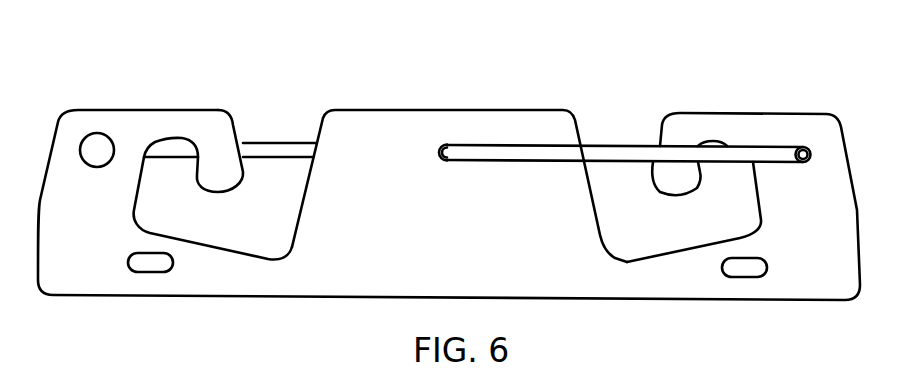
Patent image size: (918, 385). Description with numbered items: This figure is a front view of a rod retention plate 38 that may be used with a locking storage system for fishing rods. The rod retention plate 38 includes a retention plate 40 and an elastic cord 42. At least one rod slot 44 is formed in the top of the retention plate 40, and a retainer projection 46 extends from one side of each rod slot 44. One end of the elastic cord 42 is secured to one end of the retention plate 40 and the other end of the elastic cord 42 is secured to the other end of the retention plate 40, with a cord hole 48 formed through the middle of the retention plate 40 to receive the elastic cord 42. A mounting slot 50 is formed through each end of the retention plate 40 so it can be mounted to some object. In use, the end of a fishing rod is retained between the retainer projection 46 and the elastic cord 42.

The rod retention plate 38 is at (537, 88).
The retention plate 40 is at (382, 277).
The elastic cord 42 is at (620, 150).
The rod slot 44 is at (278, 233).
The retainer projection 46 is at (222, 178).
The cord hole 48 is at (440, 143).
The mounting slot 50 is at (158, 271).